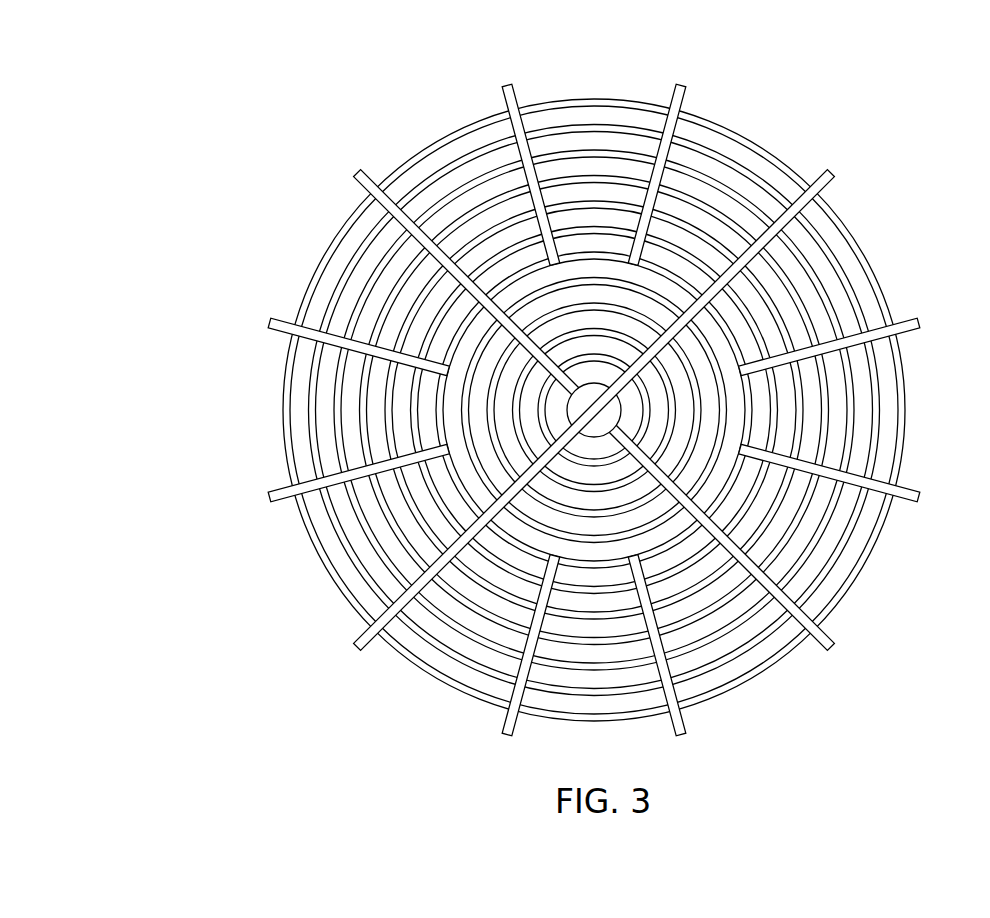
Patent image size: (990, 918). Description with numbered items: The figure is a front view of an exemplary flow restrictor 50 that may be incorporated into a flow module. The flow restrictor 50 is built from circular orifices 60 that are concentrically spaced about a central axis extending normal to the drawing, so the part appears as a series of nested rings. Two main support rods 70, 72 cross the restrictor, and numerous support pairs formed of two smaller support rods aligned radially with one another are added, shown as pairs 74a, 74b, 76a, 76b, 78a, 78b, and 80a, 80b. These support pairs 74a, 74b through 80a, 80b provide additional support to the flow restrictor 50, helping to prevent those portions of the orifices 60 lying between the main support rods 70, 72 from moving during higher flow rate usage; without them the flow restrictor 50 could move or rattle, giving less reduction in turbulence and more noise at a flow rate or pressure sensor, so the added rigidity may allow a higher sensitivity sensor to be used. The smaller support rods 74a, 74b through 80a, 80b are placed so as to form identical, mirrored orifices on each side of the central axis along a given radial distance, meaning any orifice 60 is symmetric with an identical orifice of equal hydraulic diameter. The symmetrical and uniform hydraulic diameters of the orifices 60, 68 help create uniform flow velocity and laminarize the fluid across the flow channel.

The flow restrictor 50 is at (836, 118).
The orifices 60 is at (493, 273).
The orifices 68 is at (434, 141).
The main support rod 70 is at (832, 188).
The main support rod 72 is at (362, 186).
The support rod 74a is at (512, 100).
The support rod 74b is at (684, 724).
The support rod 76a is at (684, 96).
The support rod 76b is at (505, 724).
The support rod 78a is at (918, 336).
The support rod 78b is at (277, 490).
The support rod 80a is at (280, 334).
The support rod 80b is at (919, 490).